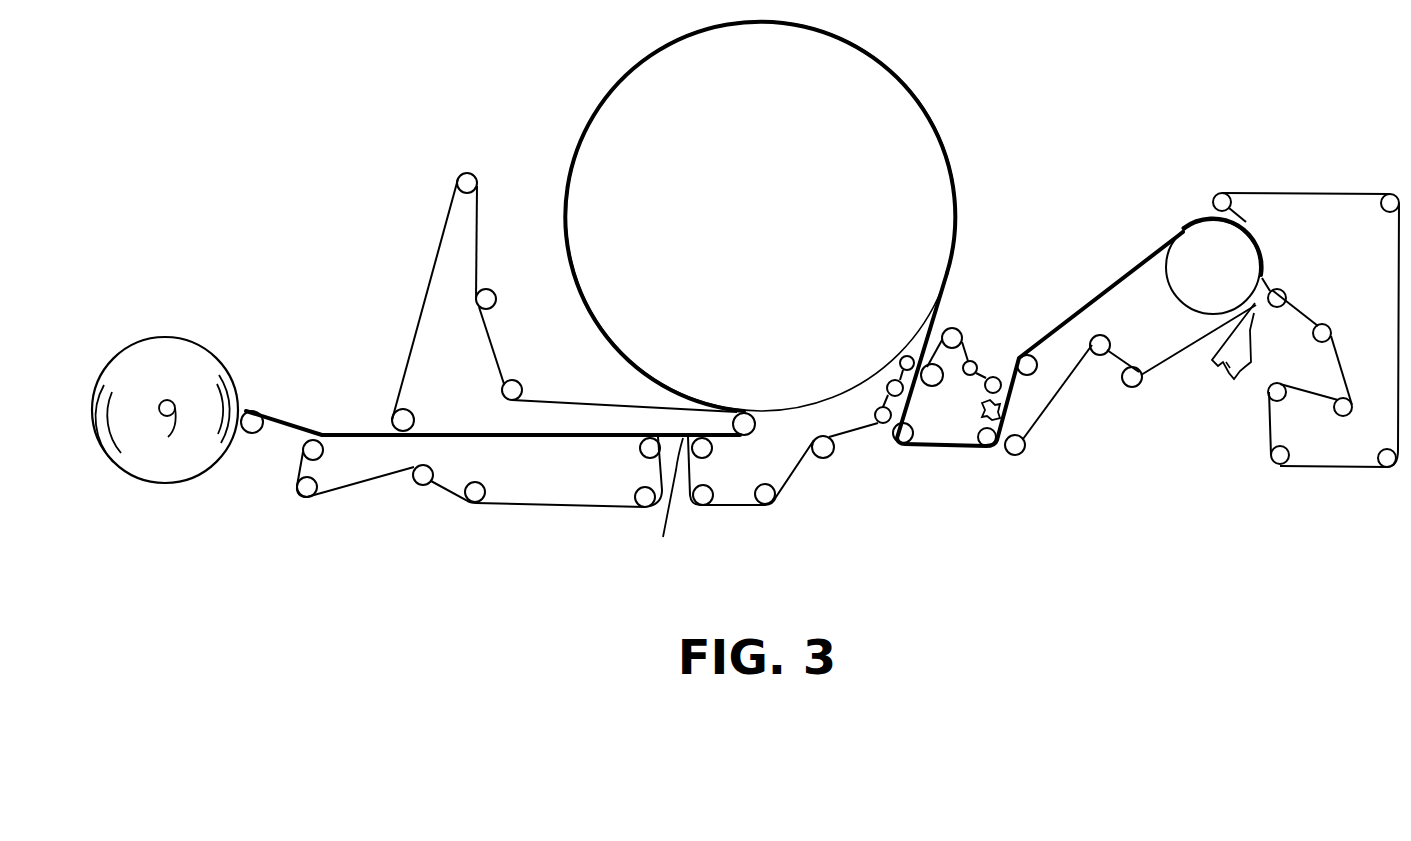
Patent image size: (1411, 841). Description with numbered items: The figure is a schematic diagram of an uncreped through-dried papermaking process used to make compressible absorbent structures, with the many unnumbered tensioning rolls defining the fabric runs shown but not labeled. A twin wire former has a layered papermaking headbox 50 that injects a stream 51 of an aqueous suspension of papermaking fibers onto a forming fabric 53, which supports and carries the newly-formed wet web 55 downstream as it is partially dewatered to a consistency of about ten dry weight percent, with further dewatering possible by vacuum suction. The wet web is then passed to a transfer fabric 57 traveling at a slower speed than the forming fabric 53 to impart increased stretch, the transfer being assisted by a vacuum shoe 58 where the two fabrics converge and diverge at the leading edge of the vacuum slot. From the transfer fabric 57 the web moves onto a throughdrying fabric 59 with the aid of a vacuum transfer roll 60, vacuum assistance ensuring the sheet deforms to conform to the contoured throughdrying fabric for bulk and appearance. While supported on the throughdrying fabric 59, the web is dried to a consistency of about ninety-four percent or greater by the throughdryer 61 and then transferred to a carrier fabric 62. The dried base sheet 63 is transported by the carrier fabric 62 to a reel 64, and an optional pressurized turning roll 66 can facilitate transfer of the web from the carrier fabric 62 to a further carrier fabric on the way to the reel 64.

The layered papermaking headbox 50 is at (1242, 380).
The stream 51 is at (1263, 305).
The forming fabric 53 is at (1162, 368).
The wet web 55 is at (1183, 230).
The transfer fabric 57 is at (985, 372).
The vacuum shoe 58 is at (982, 408).
The throughdrying fabric 59 is at (850, 431).
The vacuum transfer roll 60 is at (888, 383).
The throughdryer 61 is at (733, 245).
The carrier fabric 62 is at (420, 296).
The dried base sheet 63 is at (665, 506).
The reel 64 is at (149, 473).
The pressurized turning roll 66 is at (392, 410).